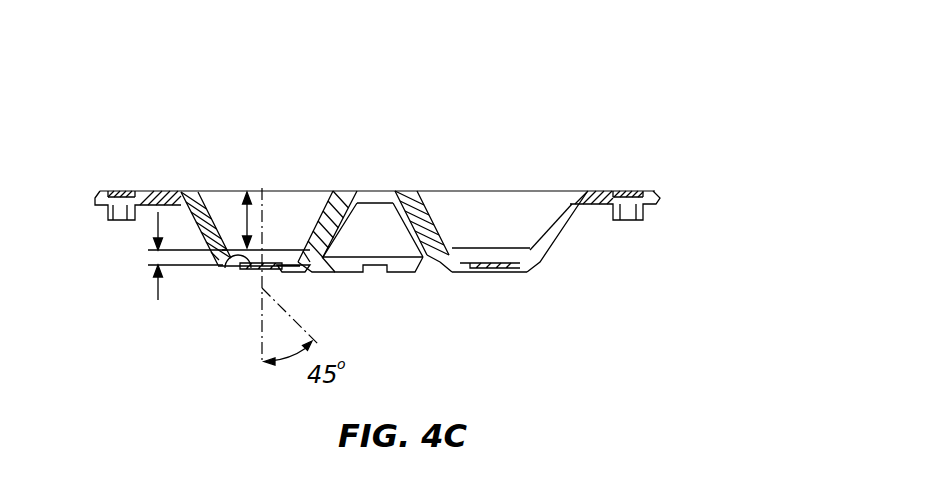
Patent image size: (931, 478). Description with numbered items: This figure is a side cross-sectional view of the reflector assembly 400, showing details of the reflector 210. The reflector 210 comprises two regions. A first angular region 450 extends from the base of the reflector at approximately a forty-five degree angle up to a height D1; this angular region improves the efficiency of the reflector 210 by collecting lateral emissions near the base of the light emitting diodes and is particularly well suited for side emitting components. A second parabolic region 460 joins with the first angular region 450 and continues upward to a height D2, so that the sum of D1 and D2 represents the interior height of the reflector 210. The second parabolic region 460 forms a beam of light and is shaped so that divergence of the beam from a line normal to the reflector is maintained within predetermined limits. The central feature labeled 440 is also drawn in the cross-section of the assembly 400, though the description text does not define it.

The reflector assembly 400 is at (612, 88).
The reflector 210 is at (215, 207).
The second parabolic region 460 is at (200, 209).
The central boss 440 is at (272, 267).
The first angular region 450 is at (257, 283).
The height D1 is at (160, 254).
The height D2 is at (240, 217).